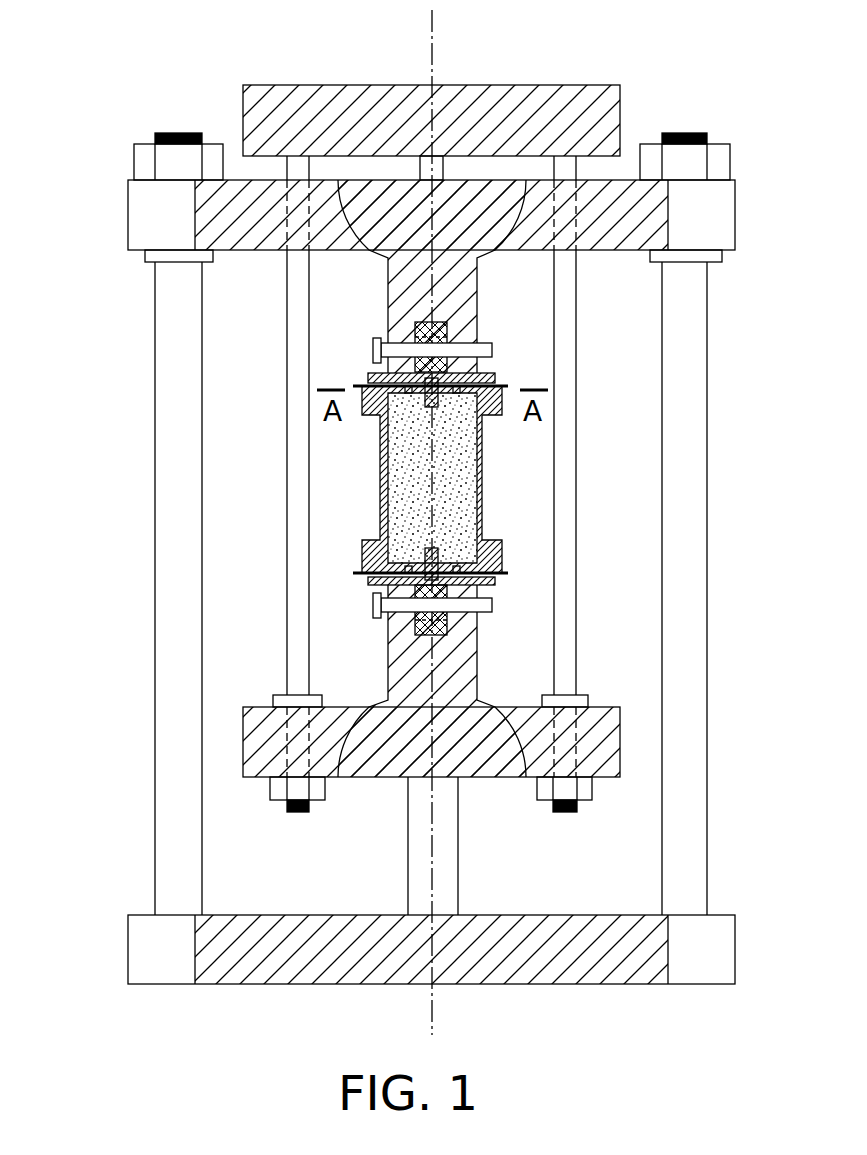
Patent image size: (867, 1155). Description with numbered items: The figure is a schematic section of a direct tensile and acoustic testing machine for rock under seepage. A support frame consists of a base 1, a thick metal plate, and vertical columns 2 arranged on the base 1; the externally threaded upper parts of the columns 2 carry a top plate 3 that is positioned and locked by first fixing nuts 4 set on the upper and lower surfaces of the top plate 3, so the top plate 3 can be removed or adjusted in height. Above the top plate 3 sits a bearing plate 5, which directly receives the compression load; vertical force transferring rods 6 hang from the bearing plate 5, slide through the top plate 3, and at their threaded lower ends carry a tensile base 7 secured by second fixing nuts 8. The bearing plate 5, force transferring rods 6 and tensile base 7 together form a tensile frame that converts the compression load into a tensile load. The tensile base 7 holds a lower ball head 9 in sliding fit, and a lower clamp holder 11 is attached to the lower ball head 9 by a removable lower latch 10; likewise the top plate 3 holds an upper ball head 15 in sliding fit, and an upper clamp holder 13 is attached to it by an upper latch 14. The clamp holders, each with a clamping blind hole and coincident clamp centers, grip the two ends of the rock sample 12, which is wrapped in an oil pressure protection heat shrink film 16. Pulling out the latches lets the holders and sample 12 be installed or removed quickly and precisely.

The base 1 is at (175, 966).
The column 2 is at (175, 525).
The top plate 3 is at (150, 220).
The first fixing nut 4 is at (145, 164).
The bearing plate 5 is at (500, 115).
The force transferring rod 6 is at (568, 337).
The tensile base 7 is at (605, 720).
The second fixing nut 8 is at (545, 790).
The lower ball head 9 is at (400, 678).
The lower latch 10 is at (373, 605).
The lower clamp holder 11 is at (366, 563).
The sample 12 is at (403, 472).
The upper clamp holder 13 is at (371, 378).
The upper latch 14 is at (374, 350).
The upper ball head 15 is at (405, 268).
The oil pressure protection heat shrink film 16 is at (483, 470).